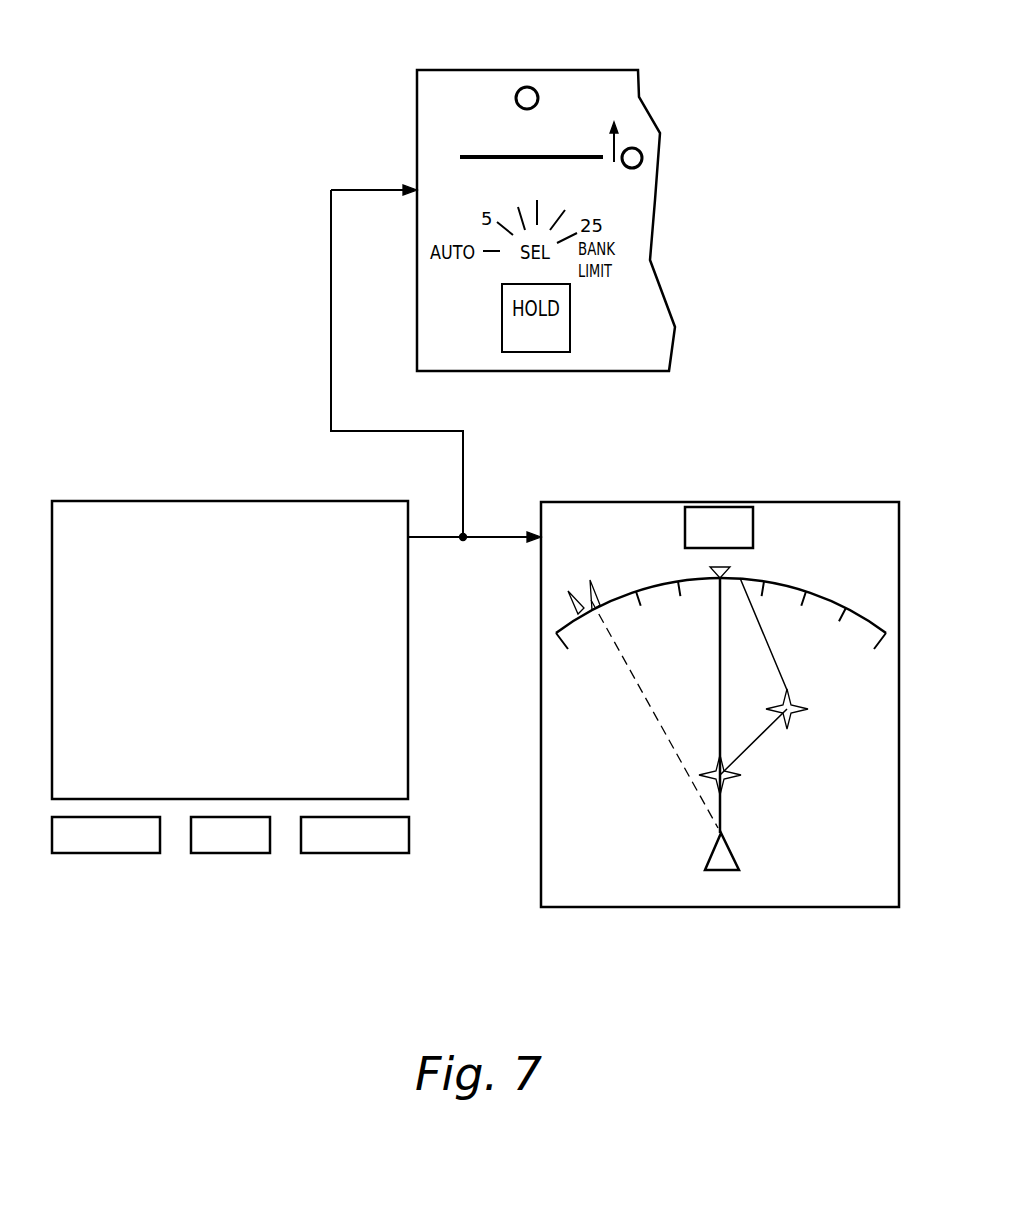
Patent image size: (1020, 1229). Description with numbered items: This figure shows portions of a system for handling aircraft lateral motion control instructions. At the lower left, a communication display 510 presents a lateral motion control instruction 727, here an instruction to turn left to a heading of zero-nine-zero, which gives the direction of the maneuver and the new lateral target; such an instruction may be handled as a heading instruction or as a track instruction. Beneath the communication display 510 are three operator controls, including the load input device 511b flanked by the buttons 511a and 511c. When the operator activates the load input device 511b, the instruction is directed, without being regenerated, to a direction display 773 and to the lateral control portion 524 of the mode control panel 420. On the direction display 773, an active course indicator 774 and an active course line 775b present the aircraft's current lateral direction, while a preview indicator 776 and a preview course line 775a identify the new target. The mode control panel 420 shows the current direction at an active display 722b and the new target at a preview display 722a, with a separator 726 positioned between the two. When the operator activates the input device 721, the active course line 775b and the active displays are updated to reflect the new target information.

The mode control panel 420 is at (465, 70).
The lateral control portion 524 is at (612, 88).
The active display 722b is at (583, 128).
The preview display 722a is at (583, 182).
The input device 721 is at (645, 163).
The separator 726 is at (460, 157).
The lateral motion control instruction 727 is at (52, 548).
The communication display 510 is at (287, 501).
The accept button 511a is at (112, 853).
The load input device 511b is at (220, 853).
The reject button 511c is at (360, 853).
The direction display 773 is at (514, 786).
The active course indicator 774 is at (745, 507).
The preview indicator 776 is at (590, 582).
The preview course line 775a is at (647, 710).
The active course line 775b is at (722, 813).